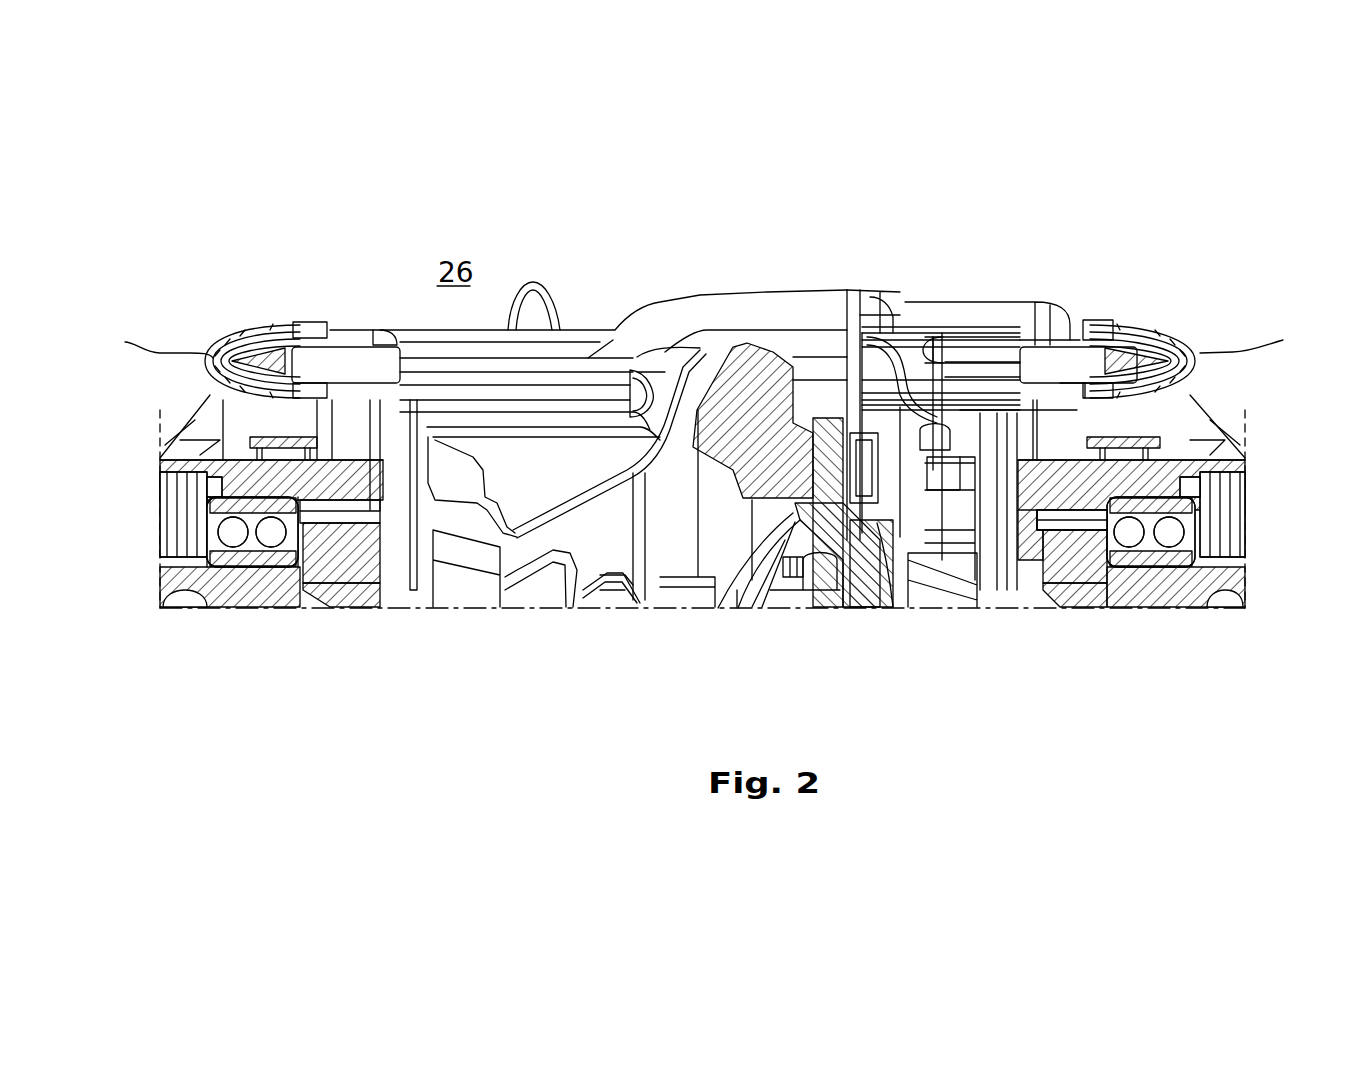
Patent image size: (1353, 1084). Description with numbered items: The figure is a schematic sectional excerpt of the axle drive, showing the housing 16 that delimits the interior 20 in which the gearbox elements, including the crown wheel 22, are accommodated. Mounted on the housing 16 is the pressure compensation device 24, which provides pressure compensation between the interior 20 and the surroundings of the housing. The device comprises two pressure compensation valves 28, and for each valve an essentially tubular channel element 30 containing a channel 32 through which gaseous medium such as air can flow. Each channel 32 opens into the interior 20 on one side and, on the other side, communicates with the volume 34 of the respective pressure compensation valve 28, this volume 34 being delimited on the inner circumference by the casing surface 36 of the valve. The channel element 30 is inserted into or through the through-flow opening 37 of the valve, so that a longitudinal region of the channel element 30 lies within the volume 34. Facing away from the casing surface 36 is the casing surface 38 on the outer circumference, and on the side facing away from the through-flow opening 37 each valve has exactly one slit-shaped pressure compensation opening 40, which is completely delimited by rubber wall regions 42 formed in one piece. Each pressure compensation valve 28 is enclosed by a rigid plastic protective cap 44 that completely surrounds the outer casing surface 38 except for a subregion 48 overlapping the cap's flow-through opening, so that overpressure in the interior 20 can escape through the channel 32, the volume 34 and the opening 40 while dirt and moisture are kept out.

The housing 16 is at (1042, 300).
The interior 20 is at (898, 326).
The crown wheel 22 is at (737, 347).
The pressure compensation device 24 is at (1200, 387).
The pressure compensation valve 28 is at (255, 331).
The channel element 30 is at (378, 340).
The channel 32 is at (345, 350).
The volume 34 is at (212, 398).
The casing surface on the inner circumference 36 is at (250, 455).
The through-flow opening 37 is at (333, 380).
The casing surface on the outer circumference 38 is at (252, 330).
The pressure compensation opening 40 is at (702, 341).
The wall regions 42 is at (212, 368).
The protective cap 44 is at (325, 385).
The subregion 48 is at (280, 348).